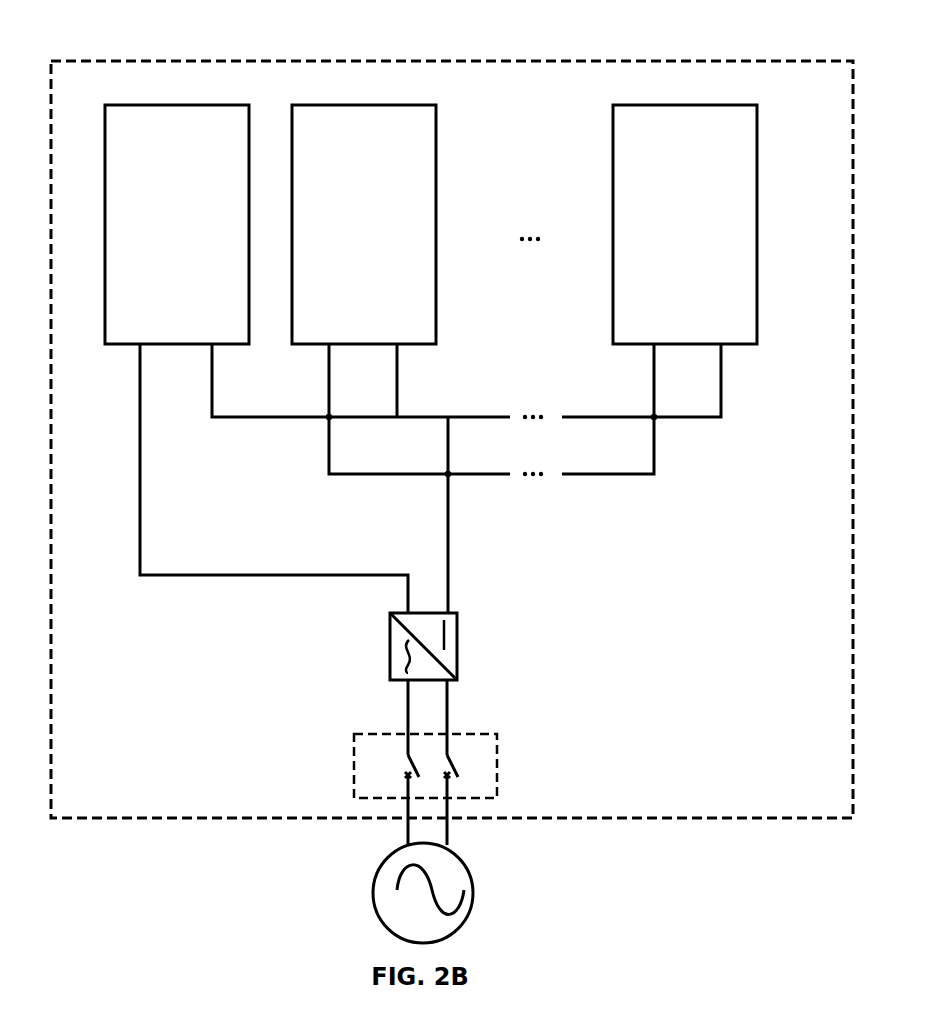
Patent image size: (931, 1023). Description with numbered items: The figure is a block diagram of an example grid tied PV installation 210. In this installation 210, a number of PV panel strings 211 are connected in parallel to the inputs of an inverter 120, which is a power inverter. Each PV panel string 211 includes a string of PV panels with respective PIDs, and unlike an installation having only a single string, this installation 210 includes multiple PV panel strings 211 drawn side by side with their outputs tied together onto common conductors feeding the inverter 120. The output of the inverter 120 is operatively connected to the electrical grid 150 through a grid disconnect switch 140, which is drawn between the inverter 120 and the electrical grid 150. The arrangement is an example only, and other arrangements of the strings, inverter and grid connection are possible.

The grid tied PV installation 210 is at (124, 43).
The PV panel string 211 is at (197, 180).
The inverter 120 is at (457, 653).
The grid disconnect switch 140 is at (497, 767).
The electrical grid 150 is at (473, 893).